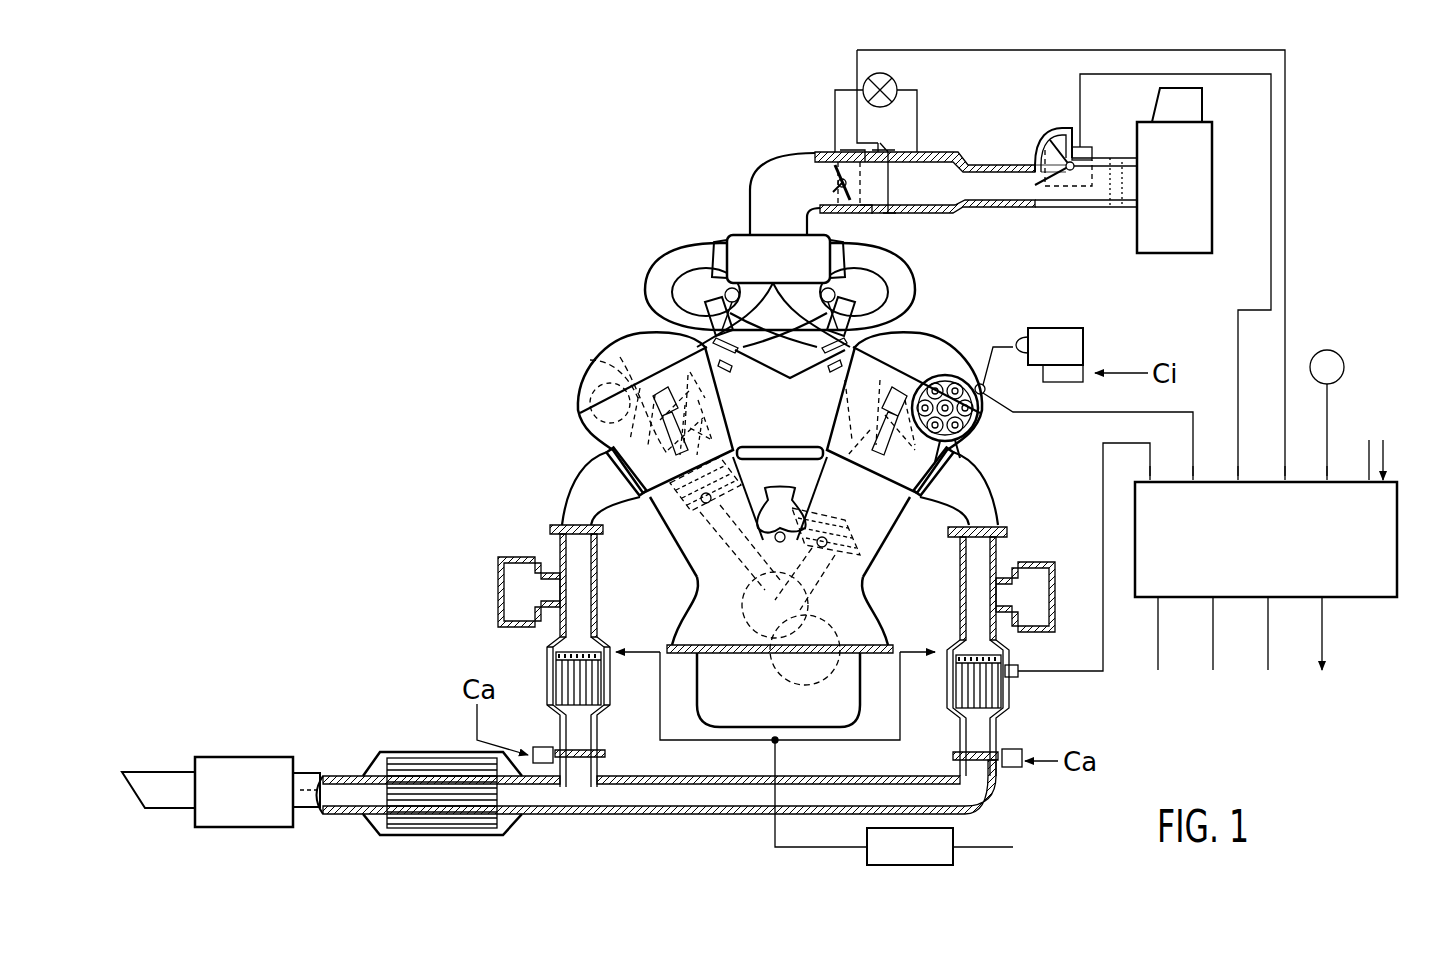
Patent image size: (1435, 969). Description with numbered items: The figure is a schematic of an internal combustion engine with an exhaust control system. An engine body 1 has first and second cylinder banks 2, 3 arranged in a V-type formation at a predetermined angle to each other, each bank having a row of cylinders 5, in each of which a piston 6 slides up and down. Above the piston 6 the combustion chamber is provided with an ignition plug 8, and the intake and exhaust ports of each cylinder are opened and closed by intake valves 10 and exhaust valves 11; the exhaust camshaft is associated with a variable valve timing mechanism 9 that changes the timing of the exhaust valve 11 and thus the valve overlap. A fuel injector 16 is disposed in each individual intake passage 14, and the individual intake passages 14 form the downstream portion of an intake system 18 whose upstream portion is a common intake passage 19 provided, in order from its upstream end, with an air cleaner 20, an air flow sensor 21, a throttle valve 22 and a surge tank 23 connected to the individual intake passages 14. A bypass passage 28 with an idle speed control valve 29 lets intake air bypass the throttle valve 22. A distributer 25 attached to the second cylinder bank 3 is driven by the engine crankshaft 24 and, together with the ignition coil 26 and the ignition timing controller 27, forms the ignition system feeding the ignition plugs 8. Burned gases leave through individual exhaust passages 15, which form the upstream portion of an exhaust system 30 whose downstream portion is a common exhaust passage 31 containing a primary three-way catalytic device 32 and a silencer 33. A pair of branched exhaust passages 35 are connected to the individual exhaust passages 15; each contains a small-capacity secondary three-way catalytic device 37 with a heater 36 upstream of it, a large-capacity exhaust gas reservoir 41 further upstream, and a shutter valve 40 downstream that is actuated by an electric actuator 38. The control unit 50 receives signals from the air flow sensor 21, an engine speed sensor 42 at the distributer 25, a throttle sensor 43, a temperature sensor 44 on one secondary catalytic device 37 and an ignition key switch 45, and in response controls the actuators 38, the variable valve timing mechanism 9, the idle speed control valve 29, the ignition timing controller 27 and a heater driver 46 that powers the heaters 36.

The engine body 1 is at (724, 542).
The first cylinder bank 2 is at (655, 514).
The second cylinder bank 3 is at (900, 514).
The cylinder 5 is at (728, 582).
The piston 6 is at (781, 492).
The ignition plug 8 is at (652, 384).
The variable valve timing mechanism 9 is at (600, 387).
The intake valve 10 is at (698, 402).
The exhaust valve 11 is at (622, 367).
The individual intake passage 14 is at (652, 284).
The individual exhaust passage 15 is at (575, 492).
The fuel injector 16 is at (800, 335).
The intake system 18 is at (758, 172).
The common intake passage 19 is at (936, 154).
The air cleaner 20 is at (1203, 207).
The air flow sensor 21 is at (1078, 146).
The throttle valve 22 is at (826, 156).
The surge tank 23 is at (745, 238).
The engine crankshaft 24 is at (750, 628).
The distributer 25 is at (940, 377).
The ignition coil 26 is at (1078, 347).
The ignition timing controller 27 is at (1048, 376).
The bypass passage 28 is at (918, 120).
The idle speed control valve 29 is at (895, 86).
The exhaust system 30 is at (355, 770).
The common exhaust passage 31 is at (305, 774).
The primary three-way catalytic device 32 is at (415, 764).
The silencer 33 is at (232, 762).
The branched exhaust passage 35 is at (597, 594).
The heater 36 is at (598, 632).
The secondary three-way catalytic device 37 is at (560, 682).
The electric actuator 38 is at (535, 750).
The shutter valve 40 is at (585, 754).
The exhaust gas reservoir 41 is at (508, 597).
The engine speed sensor 42 is at (982, 386).
The throttle sensor 43 is at (878, 131).
The temperature sensor 44 is at (1020, 672).
The ignition key switch 45 is at (1340, 354).
The heater driver 46 is at (950, 865).
The control unit 50 is at (1368, 600).